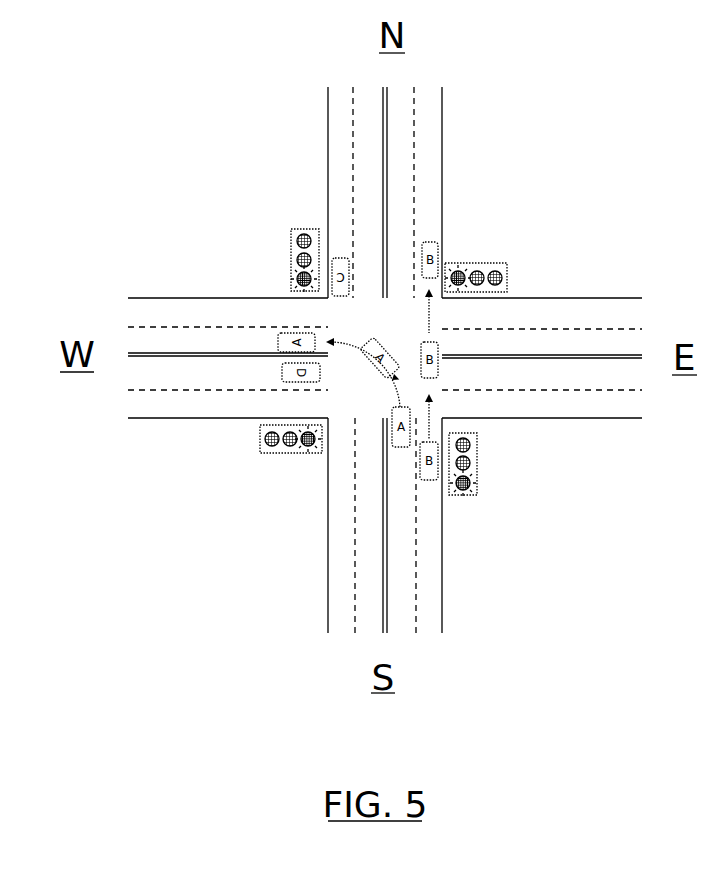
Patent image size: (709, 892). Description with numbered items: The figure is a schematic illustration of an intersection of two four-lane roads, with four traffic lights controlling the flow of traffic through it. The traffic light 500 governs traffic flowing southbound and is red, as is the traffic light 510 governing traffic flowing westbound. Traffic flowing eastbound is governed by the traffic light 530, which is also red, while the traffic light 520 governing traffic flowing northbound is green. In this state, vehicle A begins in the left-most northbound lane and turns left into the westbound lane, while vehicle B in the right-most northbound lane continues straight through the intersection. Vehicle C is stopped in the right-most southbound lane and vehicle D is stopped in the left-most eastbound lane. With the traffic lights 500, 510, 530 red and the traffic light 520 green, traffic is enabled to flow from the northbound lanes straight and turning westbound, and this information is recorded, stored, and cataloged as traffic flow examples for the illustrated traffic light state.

The traffic light 500 is at (282, 250).
The traffic light 510 is at (498, 262).
The traffic light 520 is at (485, 463).
The traffic light 530 is at (274, 455).